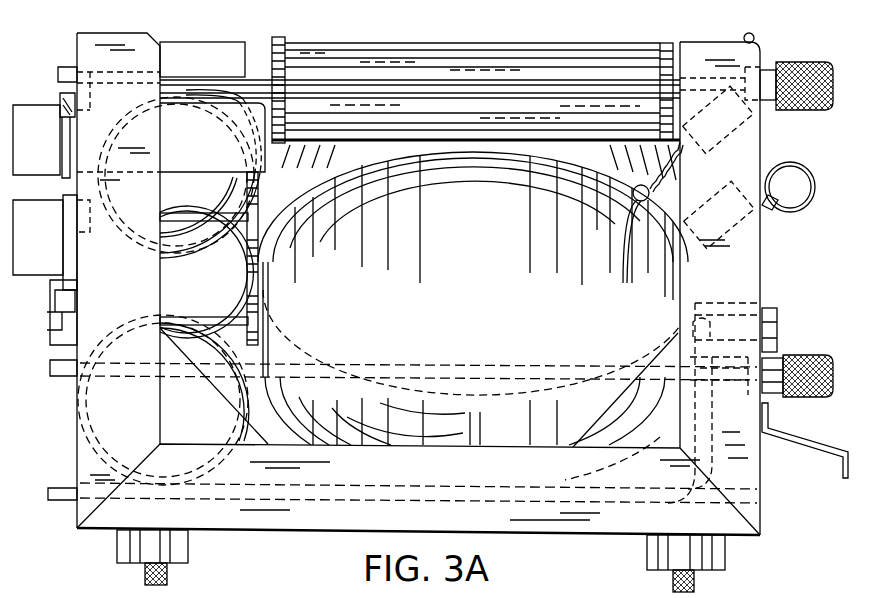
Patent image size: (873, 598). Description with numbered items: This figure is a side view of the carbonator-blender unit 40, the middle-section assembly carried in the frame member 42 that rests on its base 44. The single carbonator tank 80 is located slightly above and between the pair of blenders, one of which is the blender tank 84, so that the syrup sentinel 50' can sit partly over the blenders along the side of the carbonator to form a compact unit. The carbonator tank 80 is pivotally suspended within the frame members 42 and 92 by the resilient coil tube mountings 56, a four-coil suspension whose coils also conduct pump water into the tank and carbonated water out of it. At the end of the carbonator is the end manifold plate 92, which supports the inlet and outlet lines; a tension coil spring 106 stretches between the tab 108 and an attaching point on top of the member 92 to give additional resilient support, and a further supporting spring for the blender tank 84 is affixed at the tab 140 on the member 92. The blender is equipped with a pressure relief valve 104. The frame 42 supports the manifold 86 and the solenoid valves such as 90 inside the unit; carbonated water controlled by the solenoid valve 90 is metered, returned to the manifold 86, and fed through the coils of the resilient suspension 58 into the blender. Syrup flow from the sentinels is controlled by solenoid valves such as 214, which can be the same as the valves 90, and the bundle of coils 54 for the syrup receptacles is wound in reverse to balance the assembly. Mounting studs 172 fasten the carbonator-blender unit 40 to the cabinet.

The frame member 42 is at (128, 48).
The base 44 is at (620, 520).
The end manifold plate 92 is at (722, 52).
The carbonator-blender unit 40 is at (538, 41).
The syrup sentinel 50' is at (470, 70).
The bundle of coils 54 is at (196, 102).
The resilient coil tube mountings 56 is at (238, 281).
The resilient suspension 58 is at (232, 388).
The carbonator tank 80 is at (348, 140).
The blender tank 84 is at (448, 425).
The manifold 86 is at (58, 345).
The solenoid valve 90 is at (33, 262).
The pressure relief valve 104 is at (766, 250).
The tension coil spring 106 is at (683, 172).
The tab 108 is at (614, 251).
The tab 140 is at (755, 39).
The mounting studs 172 is at (186, 569).
The solenoid valve 214 is at (32, 115).